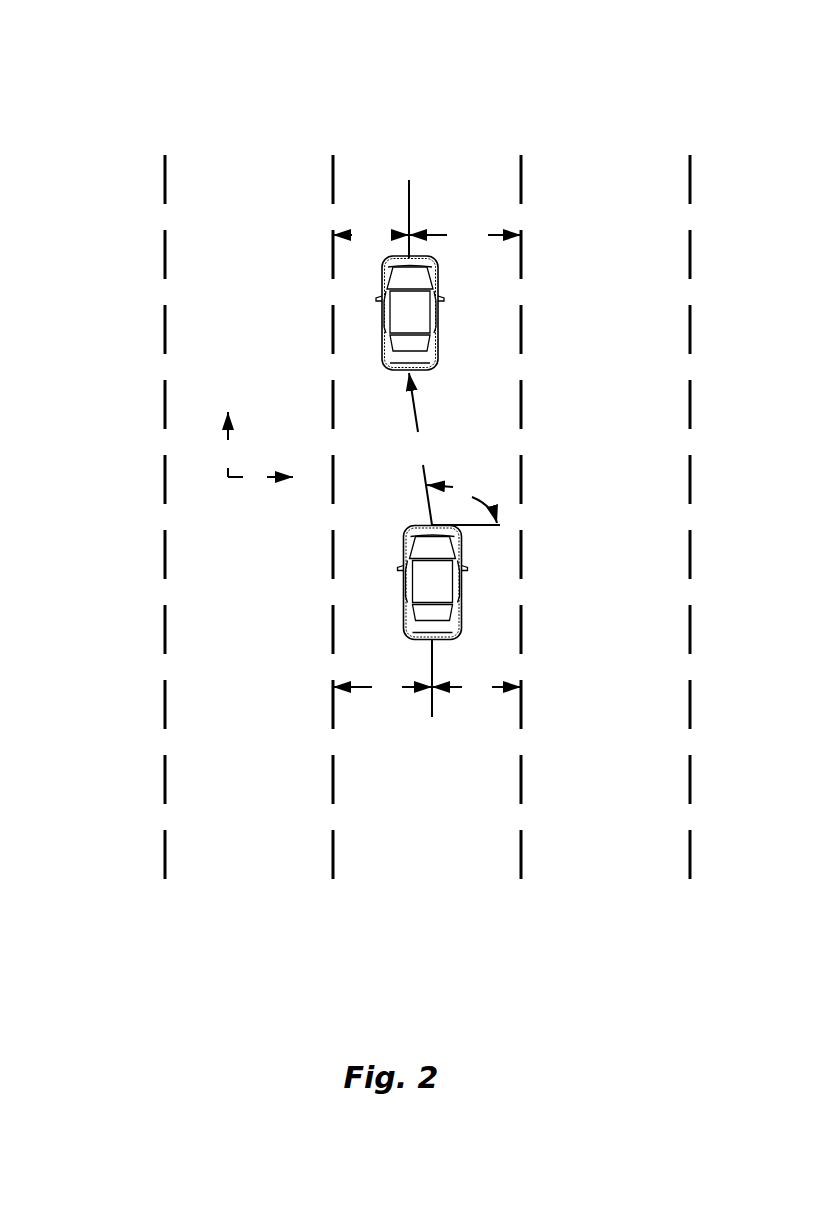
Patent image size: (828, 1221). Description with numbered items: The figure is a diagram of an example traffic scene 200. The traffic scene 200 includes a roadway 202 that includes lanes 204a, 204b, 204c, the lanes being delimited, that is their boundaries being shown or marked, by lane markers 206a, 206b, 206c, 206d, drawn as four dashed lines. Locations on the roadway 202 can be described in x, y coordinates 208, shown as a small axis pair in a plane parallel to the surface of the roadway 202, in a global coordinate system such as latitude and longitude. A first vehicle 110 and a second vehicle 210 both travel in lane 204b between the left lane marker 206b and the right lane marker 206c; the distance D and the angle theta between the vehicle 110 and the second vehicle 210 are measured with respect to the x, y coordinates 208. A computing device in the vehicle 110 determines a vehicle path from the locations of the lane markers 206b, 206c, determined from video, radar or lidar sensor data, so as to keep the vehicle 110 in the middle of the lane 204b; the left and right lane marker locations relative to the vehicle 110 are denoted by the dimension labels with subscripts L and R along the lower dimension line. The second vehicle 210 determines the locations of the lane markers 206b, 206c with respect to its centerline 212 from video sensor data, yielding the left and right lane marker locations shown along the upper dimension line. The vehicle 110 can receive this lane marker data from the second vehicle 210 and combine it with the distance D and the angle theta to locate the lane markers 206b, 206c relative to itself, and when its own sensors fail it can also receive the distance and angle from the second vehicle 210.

The traffic scene 200 is at (460, 31).
The roadway 202 is at (135, 592).
The lane 204a is at (255, 865).
The lane 204b is at (422, 865).
The lane 204c is at (588, 865).
The lane marker 206a is at (165, 772).
The left lane marker 206b is at (333, 772).
The right lane marker 206c is at (521, 772).
The lane marker 206d is at (690, 770).
The x, y coordinates 208 is at (223, 480).
The second vehicle 210 is at (437, 345).
The centerline 212 is at (410, 200).
The vehicle 110 is at (462, 585).